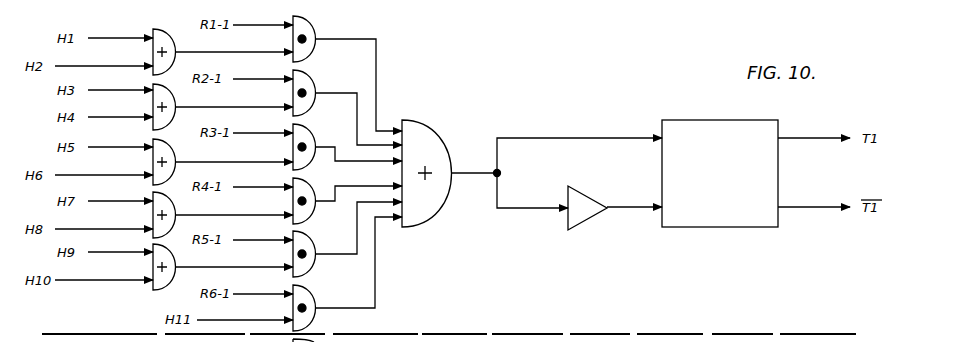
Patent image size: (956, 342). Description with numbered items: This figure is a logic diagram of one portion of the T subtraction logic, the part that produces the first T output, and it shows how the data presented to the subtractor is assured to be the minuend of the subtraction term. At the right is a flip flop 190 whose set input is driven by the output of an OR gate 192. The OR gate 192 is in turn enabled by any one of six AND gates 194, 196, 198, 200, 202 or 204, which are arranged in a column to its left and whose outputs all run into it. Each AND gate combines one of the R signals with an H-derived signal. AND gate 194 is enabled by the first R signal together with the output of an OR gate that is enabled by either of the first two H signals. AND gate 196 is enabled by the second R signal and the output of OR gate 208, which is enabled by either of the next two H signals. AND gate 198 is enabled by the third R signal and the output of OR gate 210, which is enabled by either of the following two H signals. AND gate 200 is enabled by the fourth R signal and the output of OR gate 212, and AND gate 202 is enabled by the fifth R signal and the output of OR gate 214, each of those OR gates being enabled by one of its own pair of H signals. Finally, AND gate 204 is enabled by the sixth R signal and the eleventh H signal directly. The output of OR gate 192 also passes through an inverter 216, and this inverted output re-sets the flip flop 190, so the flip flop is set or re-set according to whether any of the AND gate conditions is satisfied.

The flip flop 190 is at (688, 118).
The OR gate 192 is at (420, 128).
The AND gate 194 is at (312, 35).
The AND gate 196 is at (310, 87).
The AND gate 198 is at (308, 140).
The AND gate 200 is at (167, 32).
The AND gate 202 is at (306, 248).
The AND gate 204 is at (307, 300).
The OR gate 208 is at (175, 101).
The OR gate 210 is at (175, 157).
The OR gate 212 is at (175, 210).
The OR gate 214 is at (175, 262).
The inverter 216 is at (592, 226).